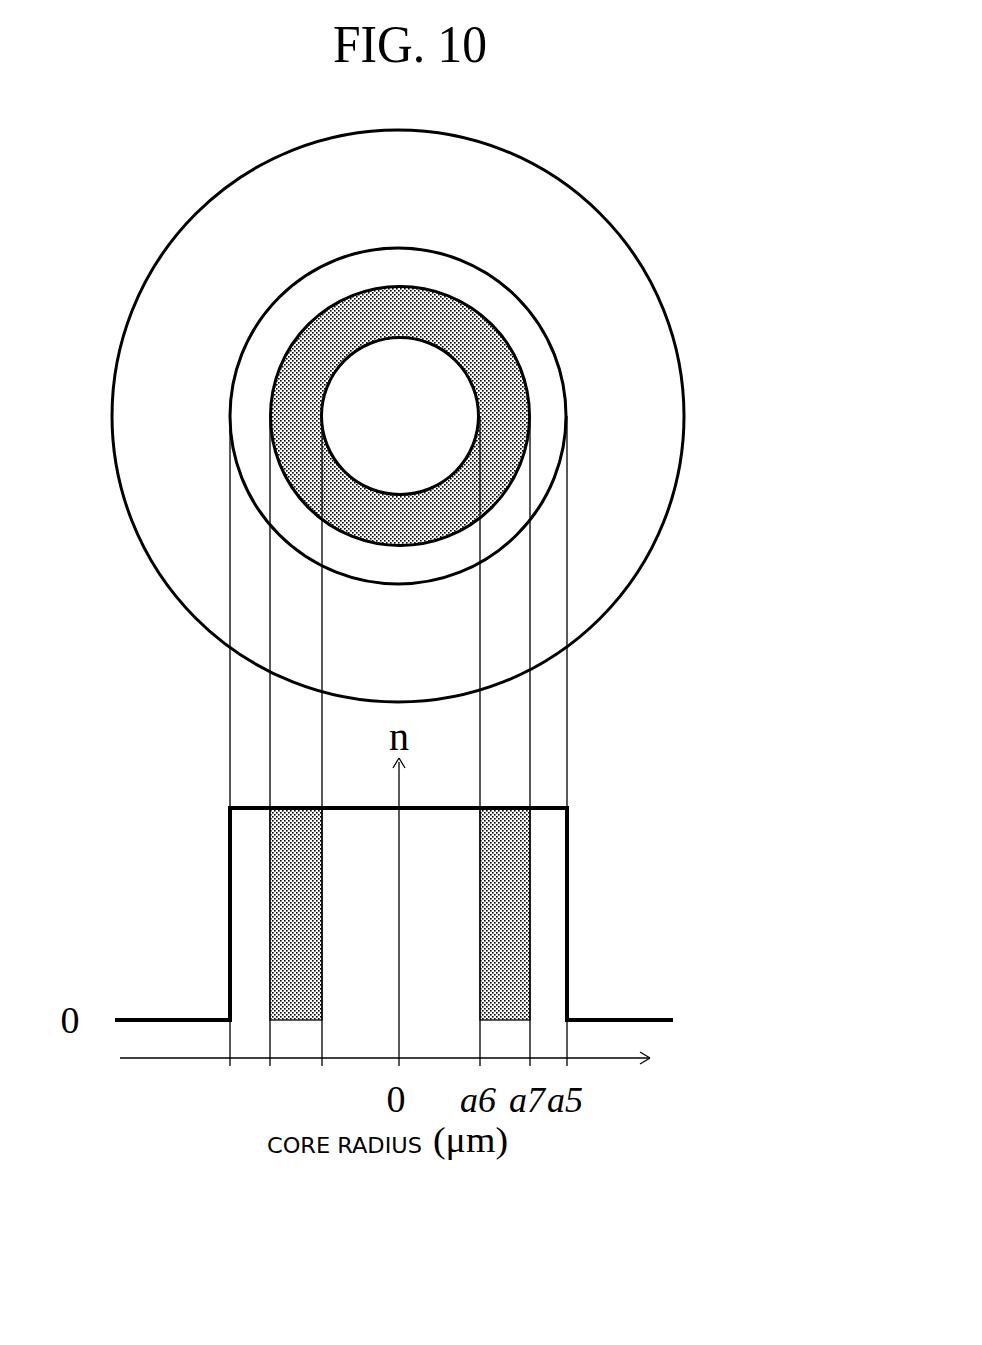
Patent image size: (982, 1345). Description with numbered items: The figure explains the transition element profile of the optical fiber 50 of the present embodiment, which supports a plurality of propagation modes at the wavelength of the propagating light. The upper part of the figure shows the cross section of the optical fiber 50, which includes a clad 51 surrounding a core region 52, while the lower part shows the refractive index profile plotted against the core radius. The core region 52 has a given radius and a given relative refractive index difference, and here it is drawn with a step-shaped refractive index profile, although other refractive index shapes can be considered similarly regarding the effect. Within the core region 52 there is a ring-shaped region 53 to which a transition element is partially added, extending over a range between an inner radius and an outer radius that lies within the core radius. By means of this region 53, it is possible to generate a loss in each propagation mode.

The optical fiber 50 is at (155, 247).
The clad 51 is at (547, 202).
The core region 52 is at (532, 313).
The region added with a transition element 53 is at (522, 369).